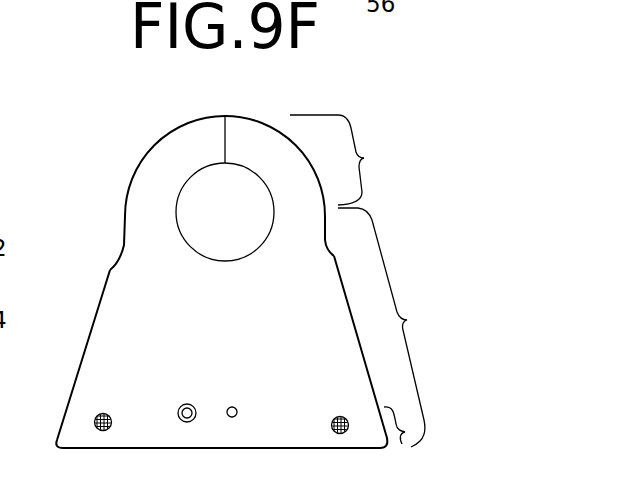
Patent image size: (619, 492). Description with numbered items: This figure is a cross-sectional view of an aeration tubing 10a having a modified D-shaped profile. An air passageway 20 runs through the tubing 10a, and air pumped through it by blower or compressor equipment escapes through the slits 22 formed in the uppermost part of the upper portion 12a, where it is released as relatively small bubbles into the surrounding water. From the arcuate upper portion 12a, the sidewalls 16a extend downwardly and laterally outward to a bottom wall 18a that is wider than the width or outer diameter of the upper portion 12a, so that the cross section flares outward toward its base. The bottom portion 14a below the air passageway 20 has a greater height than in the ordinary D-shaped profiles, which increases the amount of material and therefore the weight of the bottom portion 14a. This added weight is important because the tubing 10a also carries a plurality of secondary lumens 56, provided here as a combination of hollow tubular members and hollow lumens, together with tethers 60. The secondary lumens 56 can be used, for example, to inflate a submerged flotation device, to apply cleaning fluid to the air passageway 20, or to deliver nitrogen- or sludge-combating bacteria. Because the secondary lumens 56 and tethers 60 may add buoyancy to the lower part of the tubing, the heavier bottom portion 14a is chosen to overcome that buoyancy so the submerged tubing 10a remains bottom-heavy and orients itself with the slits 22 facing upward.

The tubing 10a is at (230, 274).
The upper portion 12a is at (349, 160).
The bottom portion 14a is at (398, 327).
The sidewalls 16a is at (77, 370).
The bottom wall 18a is at (243, 450).
The air passageway 20 is at (242, 213).
The slits 22 is at (228, 134).
The secondary lumens 56 is at (230, 406).
The tethers 60 is at (95, 419).